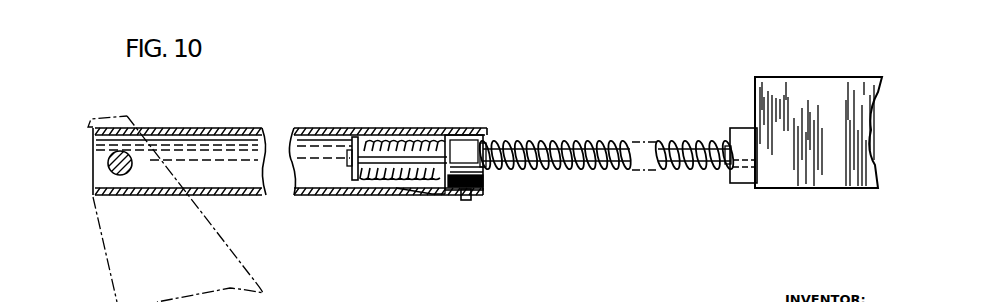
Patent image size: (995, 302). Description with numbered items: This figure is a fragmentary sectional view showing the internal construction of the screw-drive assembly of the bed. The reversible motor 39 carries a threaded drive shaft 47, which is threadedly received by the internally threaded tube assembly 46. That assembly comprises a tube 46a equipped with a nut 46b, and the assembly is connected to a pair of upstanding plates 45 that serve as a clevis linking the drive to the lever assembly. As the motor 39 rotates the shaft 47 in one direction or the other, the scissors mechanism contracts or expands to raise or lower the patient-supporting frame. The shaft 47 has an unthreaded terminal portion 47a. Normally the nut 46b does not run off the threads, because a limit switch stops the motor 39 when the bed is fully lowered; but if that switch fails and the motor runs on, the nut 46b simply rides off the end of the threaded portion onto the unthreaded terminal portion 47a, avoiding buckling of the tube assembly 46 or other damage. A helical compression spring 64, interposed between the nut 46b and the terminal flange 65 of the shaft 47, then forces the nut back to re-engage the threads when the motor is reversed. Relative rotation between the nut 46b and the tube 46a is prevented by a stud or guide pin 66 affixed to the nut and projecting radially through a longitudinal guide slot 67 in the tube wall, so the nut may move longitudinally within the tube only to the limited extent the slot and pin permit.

The motor 39 is at (792, 77).
The upstanding plates 45 is at (102, 226).
The internally threaded tube assembly 46 is at (364, 124).
The tube 46a is at (337, 196).
The nut 46b is at (485, 170).
The threaded drive shaft 47 is at (567, 140).
The unthreaded terminal portion 47a is at (413, 157).
The helical compression spring 64 is at (383, 179).
The terminal flange 65 is at (357, 140).
The guide pin 66 is at (467, 201).
The longitudinal guide slot 67 is at (414, 192).